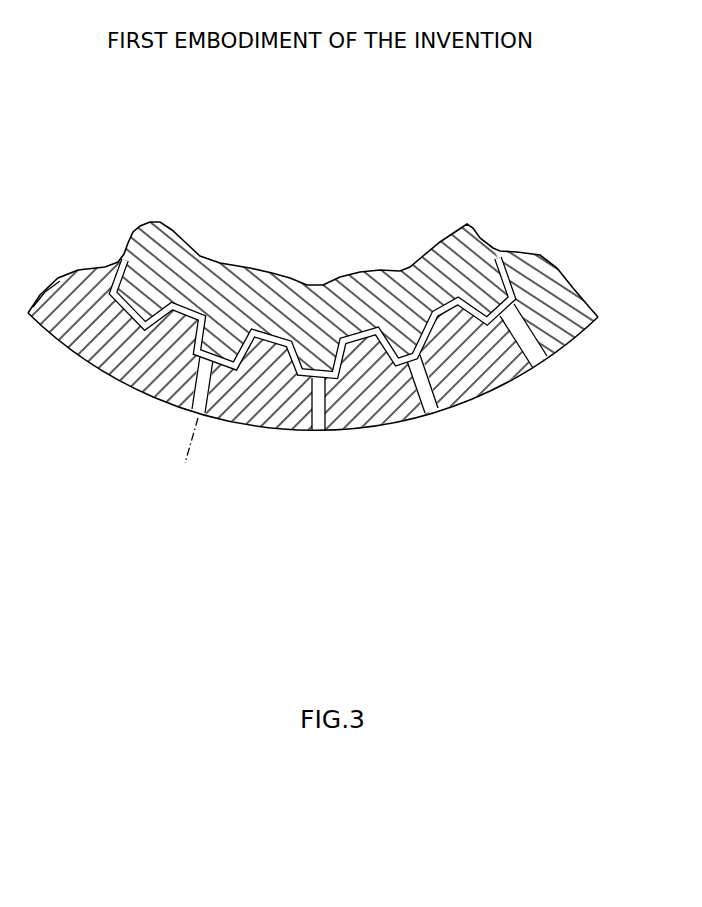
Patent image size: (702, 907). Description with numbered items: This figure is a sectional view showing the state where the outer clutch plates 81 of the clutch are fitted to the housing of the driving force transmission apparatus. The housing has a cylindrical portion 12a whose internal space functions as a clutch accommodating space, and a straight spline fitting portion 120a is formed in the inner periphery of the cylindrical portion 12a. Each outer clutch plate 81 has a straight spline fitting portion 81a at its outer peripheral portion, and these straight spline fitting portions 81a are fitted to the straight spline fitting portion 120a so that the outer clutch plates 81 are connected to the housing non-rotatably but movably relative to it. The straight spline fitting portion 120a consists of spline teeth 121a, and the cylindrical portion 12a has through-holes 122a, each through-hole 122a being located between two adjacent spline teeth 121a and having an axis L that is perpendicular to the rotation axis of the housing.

The cylindrical portion 12a is at (483, 370).
The outer clutch plate 81 is at (141, 221).
The straight spline fitting portion 81a is at (407, 358).
The straight spline fitting portion 120a is at (186, 310).
The spline tooth 121a is at (170, 328).
The through-hole 122a is at (210, 390).
The axis L is at (185, 463).